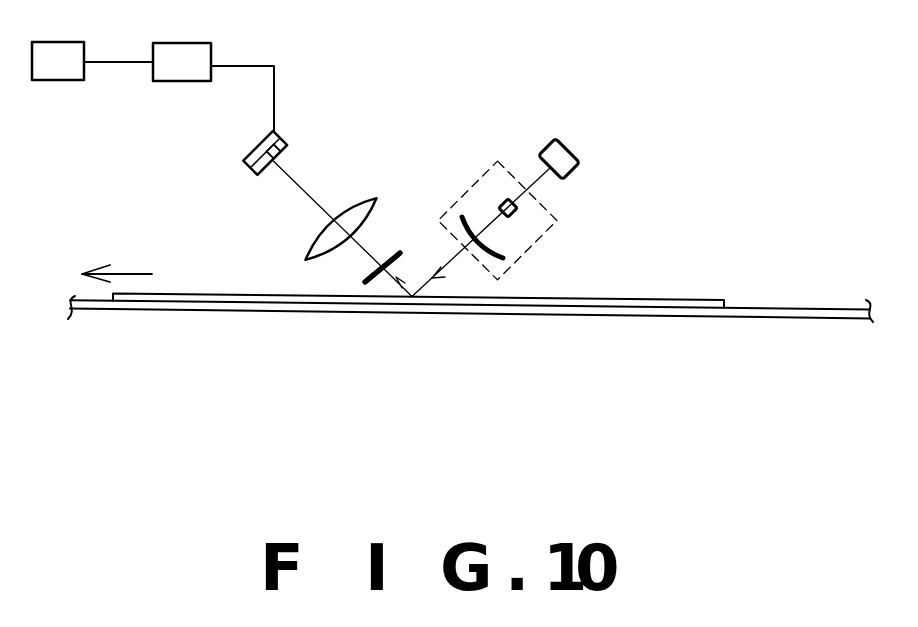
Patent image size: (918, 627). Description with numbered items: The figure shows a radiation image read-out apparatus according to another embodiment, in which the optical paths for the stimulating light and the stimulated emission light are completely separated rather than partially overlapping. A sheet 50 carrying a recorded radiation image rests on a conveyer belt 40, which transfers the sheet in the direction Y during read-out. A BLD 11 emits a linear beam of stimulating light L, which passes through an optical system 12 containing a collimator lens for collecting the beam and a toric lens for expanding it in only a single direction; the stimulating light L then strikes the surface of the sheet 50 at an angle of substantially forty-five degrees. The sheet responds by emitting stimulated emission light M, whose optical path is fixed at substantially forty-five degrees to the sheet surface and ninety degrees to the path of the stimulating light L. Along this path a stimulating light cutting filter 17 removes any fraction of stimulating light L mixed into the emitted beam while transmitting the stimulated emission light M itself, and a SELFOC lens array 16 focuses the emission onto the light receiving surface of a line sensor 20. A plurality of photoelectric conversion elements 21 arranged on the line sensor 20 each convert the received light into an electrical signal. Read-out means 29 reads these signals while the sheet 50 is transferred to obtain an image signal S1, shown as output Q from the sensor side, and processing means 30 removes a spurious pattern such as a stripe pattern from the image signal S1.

The BLD 11 is at (578, 152).
The optical system 12 is at (560, 222).
The SELFOC lens array 16 is at (360, 201).
The stimulating light cutting filter 17 is at (373, 286).
The line sensor 20 is at (242, 160).
The photoelectric conversion elements 21 is at (287, 148).
The read-out means 29 is at (182, 62).
The processing means 30 is at (58, 61).
The conveyer belt 40 is at (90, 308).
The sheet 50 is at (700, 299).
The stimulating light L is at (458, 266).
The stimulated emission light M is at (364, 254).
The output signal Q is at (256, 66).
The image signal S1 is at (118, 47).
The scanning direction Y is at (138, 273).